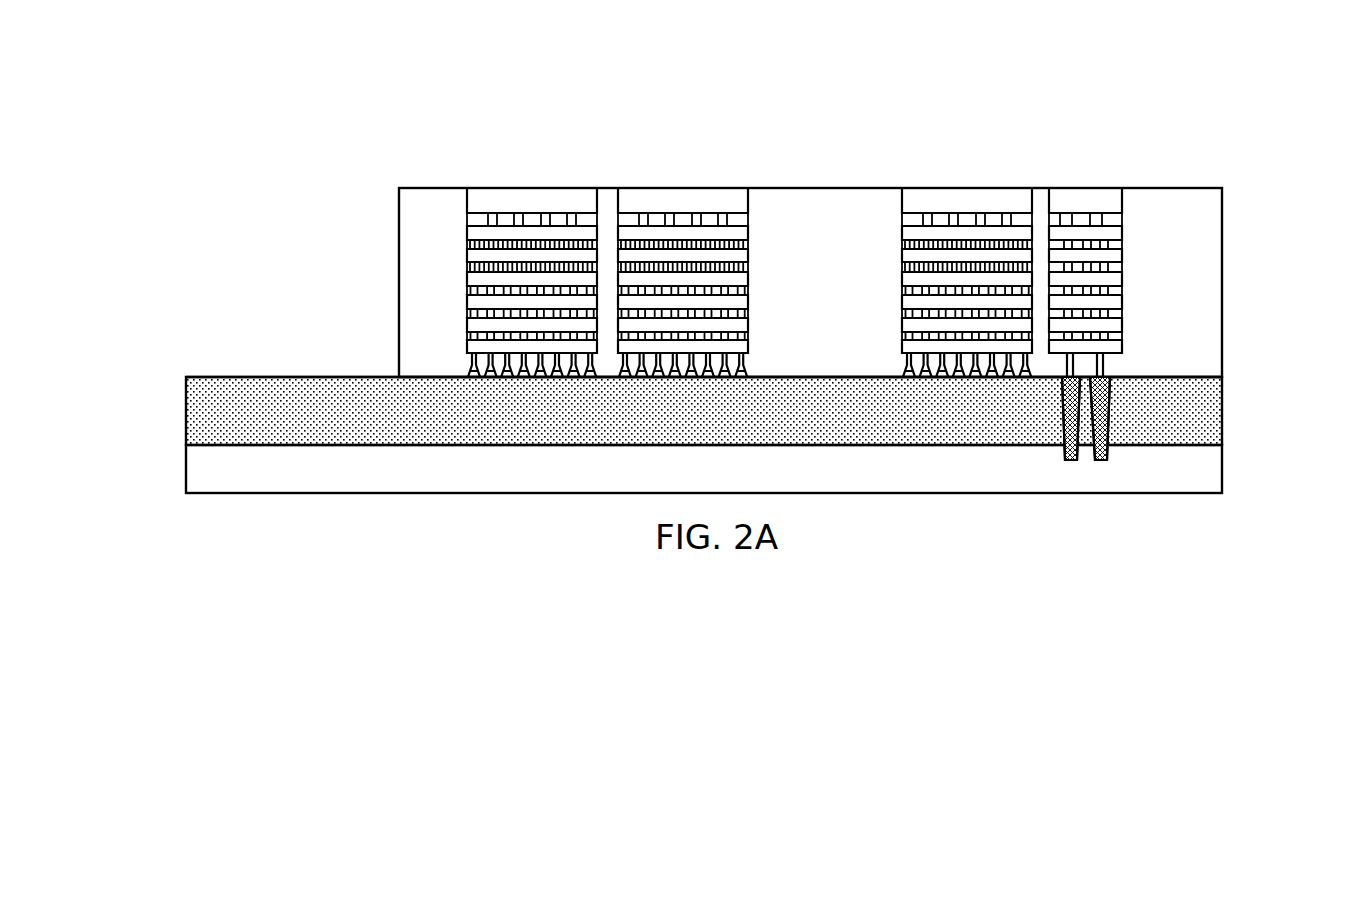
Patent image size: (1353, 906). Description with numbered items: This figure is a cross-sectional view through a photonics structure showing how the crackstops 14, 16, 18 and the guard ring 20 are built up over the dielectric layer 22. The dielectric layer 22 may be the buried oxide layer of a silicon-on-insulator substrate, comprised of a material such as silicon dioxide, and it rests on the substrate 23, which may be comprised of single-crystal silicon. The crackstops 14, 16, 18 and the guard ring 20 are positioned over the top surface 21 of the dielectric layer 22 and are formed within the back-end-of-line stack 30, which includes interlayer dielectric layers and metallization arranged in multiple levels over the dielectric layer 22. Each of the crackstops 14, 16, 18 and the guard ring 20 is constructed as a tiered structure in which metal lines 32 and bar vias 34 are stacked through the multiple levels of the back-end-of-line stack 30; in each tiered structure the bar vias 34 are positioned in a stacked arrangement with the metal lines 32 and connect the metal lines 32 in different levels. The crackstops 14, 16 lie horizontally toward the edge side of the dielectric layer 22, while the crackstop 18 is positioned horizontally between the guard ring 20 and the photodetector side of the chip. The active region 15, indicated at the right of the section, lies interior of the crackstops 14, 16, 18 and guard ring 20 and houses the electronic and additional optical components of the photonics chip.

The crackstop 14 is at (546, 174).
The crackstop 16 is at (694, 174).
The crackstop 18 is at (982, 174).
The guard ring 20 is at (1080, 174).
The active region 15 is at (1216, 155).
The top surface 21 is at (250, 377).
The dielectric layer 22 is at (1170, 431).
The substrate 23 is at (1170, 467).
The back-end-of-line stack 30 is at (1234, 186).
The metal lines 32 is at (1105, 258).
The bar vias 34 is at (1108, 291).